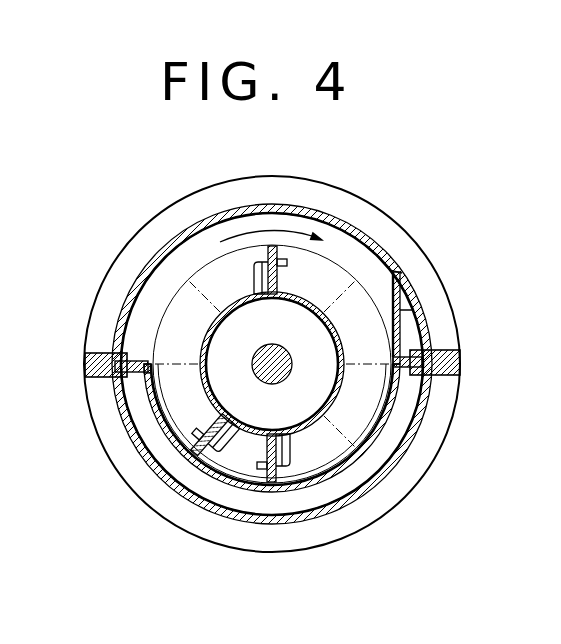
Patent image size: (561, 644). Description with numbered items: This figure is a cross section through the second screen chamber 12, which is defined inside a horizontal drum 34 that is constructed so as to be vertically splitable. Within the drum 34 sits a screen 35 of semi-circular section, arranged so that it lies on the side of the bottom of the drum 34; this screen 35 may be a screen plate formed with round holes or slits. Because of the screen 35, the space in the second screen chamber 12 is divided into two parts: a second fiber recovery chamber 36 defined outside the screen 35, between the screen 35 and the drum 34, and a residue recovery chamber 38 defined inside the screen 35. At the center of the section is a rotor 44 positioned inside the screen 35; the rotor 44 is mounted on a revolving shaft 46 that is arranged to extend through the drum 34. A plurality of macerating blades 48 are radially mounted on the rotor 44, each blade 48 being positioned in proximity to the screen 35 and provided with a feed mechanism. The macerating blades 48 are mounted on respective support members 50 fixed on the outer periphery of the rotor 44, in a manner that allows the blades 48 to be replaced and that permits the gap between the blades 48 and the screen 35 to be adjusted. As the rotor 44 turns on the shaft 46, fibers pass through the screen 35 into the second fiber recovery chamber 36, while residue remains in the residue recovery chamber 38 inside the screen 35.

The second screen chamber 12 is at (392, 208).
The horizontal drum 34 is at (323, 211).
The screen 35 is at (372, 460).
The second fiber recovery chamber 36 is at (405, 432).
The residue recovery chamber 38 is at (290, 463).
The rotor 44 is at (217, 355).
The revolving shaft 46 is at (278, 383).
The macerating blade 48 is at (288, 264).
The support member 50 is at (252, 273).